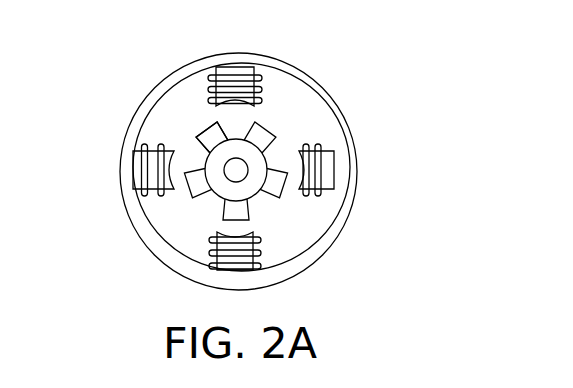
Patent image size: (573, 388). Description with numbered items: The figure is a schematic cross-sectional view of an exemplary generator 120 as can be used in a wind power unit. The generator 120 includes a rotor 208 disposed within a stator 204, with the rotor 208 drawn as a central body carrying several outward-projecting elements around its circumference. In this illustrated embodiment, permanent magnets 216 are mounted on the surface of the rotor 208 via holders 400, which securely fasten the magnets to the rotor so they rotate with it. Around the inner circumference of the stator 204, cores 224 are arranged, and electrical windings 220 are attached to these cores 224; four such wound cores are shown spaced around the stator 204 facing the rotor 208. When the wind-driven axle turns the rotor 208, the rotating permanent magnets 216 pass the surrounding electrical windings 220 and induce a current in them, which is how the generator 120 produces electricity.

The generator 120 is at (360, 89).
The stator 204 is at (354, 130).
The rotor 208 is at (211, 200).
The permanent magnets 216 is at (205, 133).
The holders 400 is at (132, 124).
The electrical windings 220 is at (255, 101).
The cores 224 is at (226, 82).